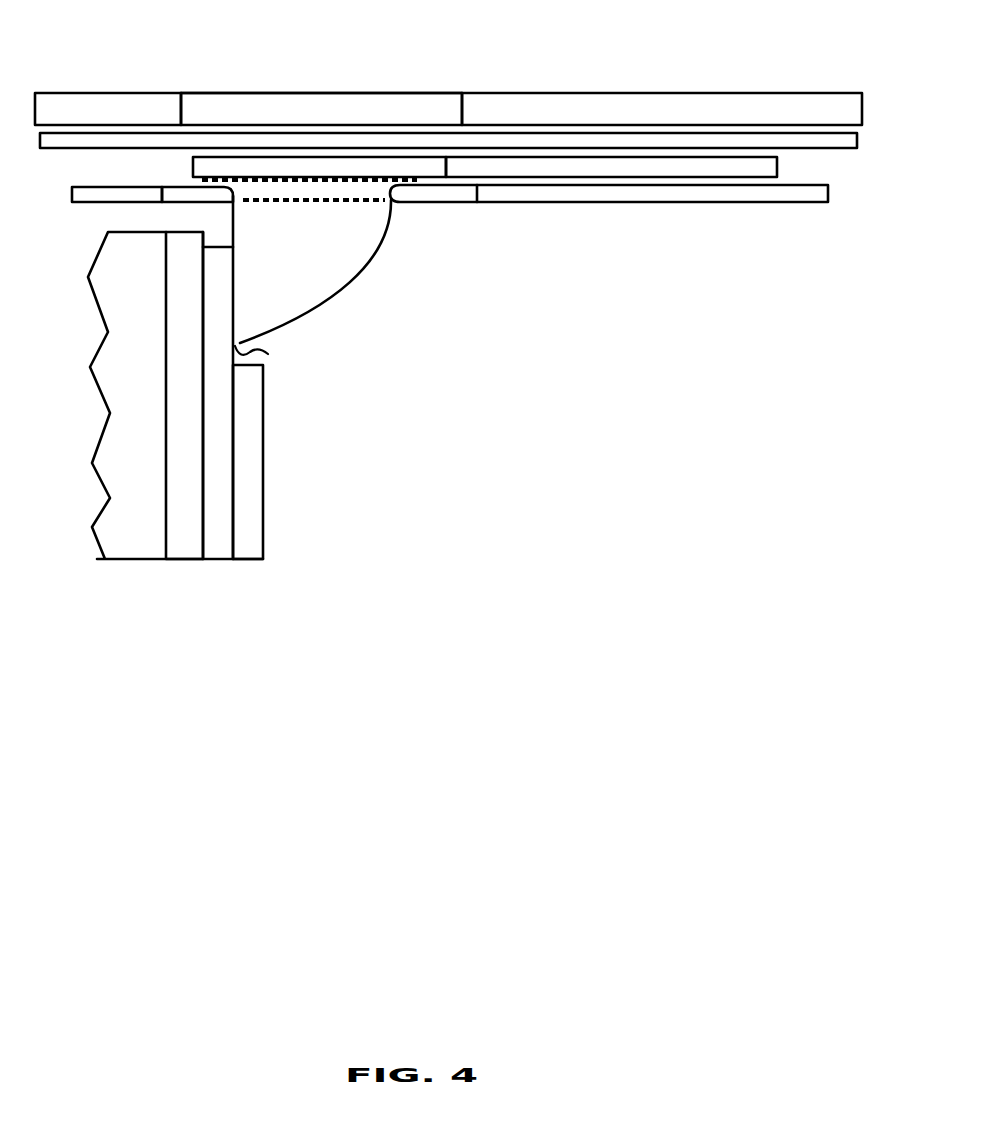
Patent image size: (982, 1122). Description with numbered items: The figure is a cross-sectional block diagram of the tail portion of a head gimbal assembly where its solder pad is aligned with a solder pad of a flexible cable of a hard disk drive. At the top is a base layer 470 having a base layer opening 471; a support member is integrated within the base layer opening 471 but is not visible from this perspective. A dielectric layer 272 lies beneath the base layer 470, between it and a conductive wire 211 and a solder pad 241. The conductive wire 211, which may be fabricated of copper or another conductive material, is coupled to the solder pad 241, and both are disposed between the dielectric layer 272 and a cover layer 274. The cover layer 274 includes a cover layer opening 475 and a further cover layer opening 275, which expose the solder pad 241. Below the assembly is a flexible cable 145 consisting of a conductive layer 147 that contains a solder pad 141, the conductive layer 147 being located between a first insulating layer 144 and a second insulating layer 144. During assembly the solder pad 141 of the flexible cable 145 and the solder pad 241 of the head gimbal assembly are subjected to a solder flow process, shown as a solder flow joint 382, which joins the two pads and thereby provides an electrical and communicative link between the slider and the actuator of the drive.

The base layer 470 is at (123, 109).
The base layer opening 471 is at (395, 107).
The cover layer opening 475 is at (272, 93).
The dielectric layer 272 is at (830, 148).
The solder pad 241 is at (417, 167).
The conductive wire 211 is at (758, 168).
The cover layer 274 is at (105, 193).
The cover layer opening 275 is at (180, 193).
The conductive layer 147 is at (222, 535).
The insulating layer 144 is at (187, 495).
The flexible cable 145 is at (95, 398).
The solder flow joint 382 is at (342, 253).
The solder pad 141 is at (275, 355).